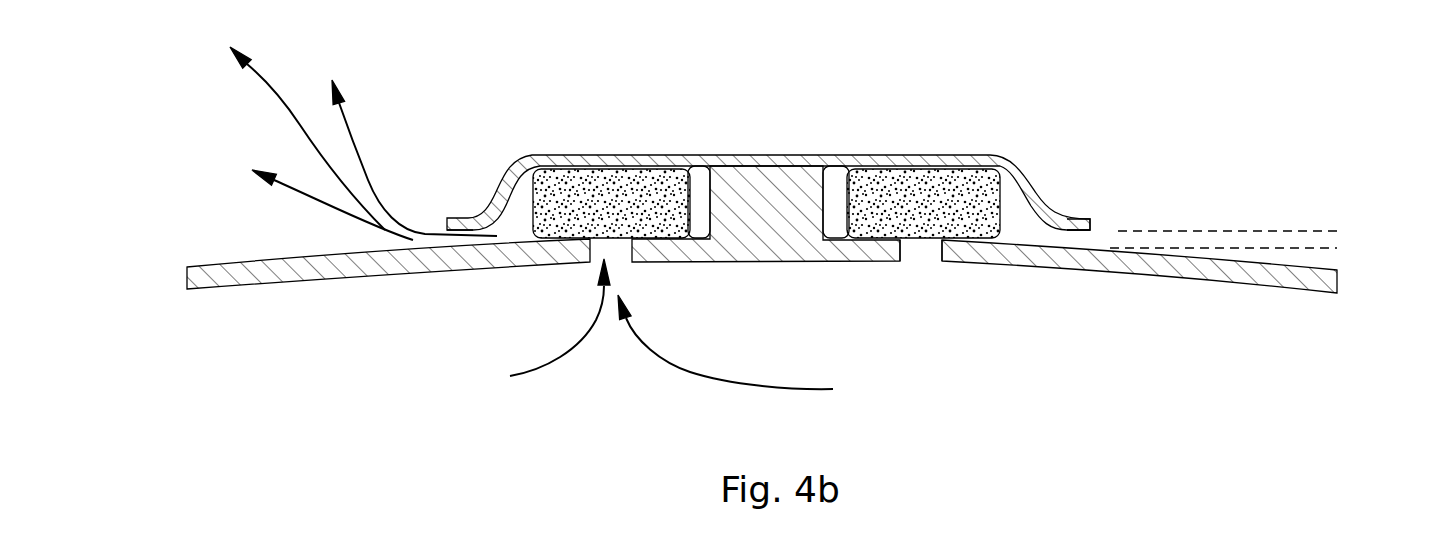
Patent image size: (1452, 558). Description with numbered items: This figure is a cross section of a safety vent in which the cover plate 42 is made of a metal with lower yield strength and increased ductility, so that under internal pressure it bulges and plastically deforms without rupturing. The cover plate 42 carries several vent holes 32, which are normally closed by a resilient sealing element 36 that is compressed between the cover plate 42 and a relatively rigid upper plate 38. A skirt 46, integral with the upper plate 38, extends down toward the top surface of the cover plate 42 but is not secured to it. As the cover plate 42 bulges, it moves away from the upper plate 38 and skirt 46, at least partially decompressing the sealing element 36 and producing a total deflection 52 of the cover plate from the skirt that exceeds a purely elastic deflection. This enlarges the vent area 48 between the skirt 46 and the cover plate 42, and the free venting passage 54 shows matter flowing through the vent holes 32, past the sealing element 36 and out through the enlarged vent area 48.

The vent holes 32 is at (912, 283).
The resilient sealing element 36 is at (915, 170).
The upper plate 38 is at (621, 158).
The cover plate 42 is at (280, 282).
The skirt 46 is at (1087, 219).
The vent area 48 is at (432, 220).
The total deflection 52 is at (1343, 231).
The free venting passage 54 is at (343, 120).